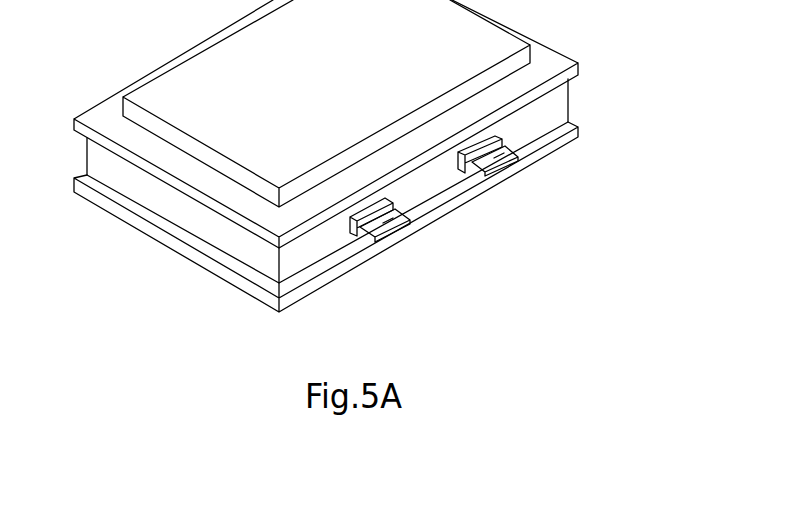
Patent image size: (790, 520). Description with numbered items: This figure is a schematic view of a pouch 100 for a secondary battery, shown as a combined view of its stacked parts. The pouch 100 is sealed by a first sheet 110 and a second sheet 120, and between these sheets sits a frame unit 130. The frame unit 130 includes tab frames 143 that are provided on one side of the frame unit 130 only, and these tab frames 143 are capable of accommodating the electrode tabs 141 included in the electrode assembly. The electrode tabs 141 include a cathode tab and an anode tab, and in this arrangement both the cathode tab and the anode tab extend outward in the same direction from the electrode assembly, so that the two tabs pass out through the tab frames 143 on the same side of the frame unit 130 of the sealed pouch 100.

The pouch for a secondary battery 100 is at (667, 12).
The first sheet 110 is at (520, 45).
The second sheet 120 is at (575, 135).
The frame unit 130 is at (555, 105).
The electrode tabs 141 is at (393, 230).
The tab frames 143 is at (358, 240).